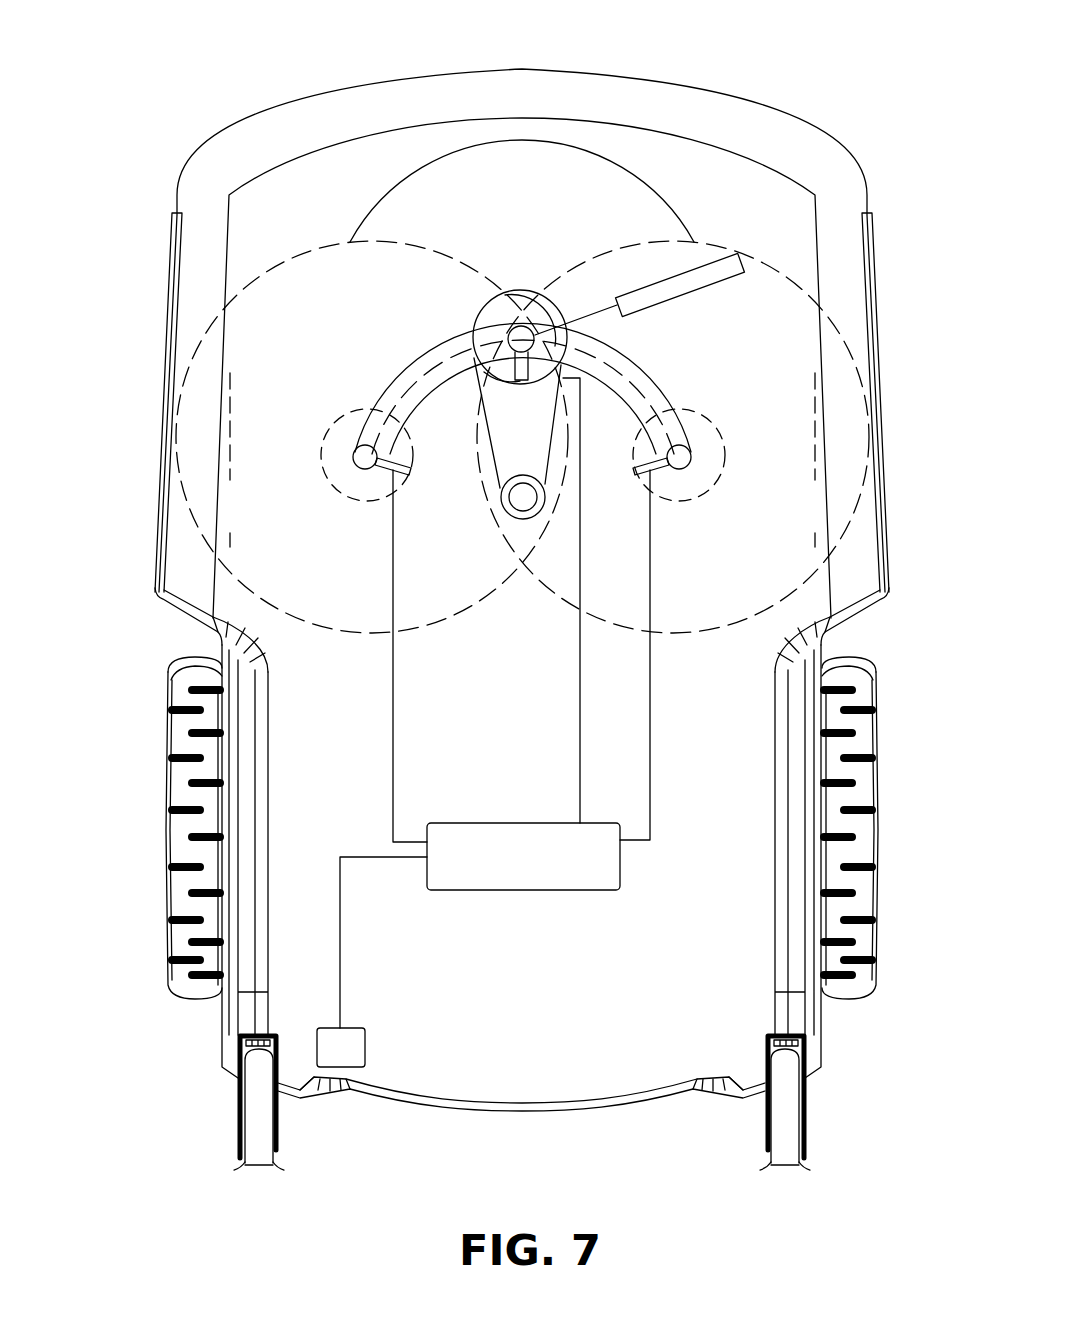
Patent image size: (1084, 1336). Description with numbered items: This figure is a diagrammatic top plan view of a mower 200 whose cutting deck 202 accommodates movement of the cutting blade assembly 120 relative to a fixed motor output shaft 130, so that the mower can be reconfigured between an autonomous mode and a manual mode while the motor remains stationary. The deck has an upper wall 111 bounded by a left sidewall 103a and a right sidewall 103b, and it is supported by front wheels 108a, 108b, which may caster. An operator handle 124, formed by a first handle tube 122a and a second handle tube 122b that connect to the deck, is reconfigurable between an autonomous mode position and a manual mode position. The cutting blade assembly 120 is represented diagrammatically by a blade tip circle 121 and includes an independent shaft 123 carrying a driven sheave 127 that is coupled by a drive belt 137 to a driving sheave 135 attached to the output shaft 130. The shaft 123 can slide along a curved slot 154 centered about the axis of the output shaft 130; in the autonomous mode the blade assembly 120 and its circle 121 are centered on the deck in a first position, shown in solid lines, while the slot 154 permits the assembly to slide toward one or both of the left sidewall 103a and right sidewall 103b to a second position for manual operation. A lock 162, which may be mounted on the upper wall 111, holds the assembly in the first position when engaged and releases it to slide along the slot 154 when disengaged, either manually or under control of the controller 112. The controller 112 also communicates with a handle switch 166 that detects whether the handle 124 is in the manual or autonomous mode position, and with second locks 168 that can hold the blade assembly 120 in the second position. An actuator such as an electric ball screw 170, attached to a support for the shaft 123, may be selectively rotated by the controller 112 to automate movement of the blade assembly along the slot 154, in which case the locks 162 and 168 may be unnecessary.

The mower 200 is at (230, 68).
The cutting deck 202 is at (848, 148).
The left sidewall 103a is at (165, 434).
The right sidewall 103b is at (880, 434).
The upper wall 111 is at (240, 262).
The cutting blade assembly 120 is at (391, 168).
The blade tip circle 121 is at (372, 206).
The independent shaft 123 is at (531, 296).
The electric ball screw 170 is at (657, 278).
The lock 162 is at (483, 350).
The driven sheave 127 is at (503, 382).
The curved slot 154 is at (390, 385).
The drive belt 137 is at (490, 422).
The output shaft 130 is at (536, 522).
The driving sheave 135 is at (506, 503).
The second locks 168 is at (376, 478).
The controller 112 is at (505, 872).
The handle switch 166 is at (368, 1042).
The front wheel 108a is at (178, 940).
The front wheel 108b is at (868, 940).
The operator handle 124 is at (230, 1152).
The first handle tube 122a is at (280, 1158).
The second handle tube 122b is at (768, 1156).